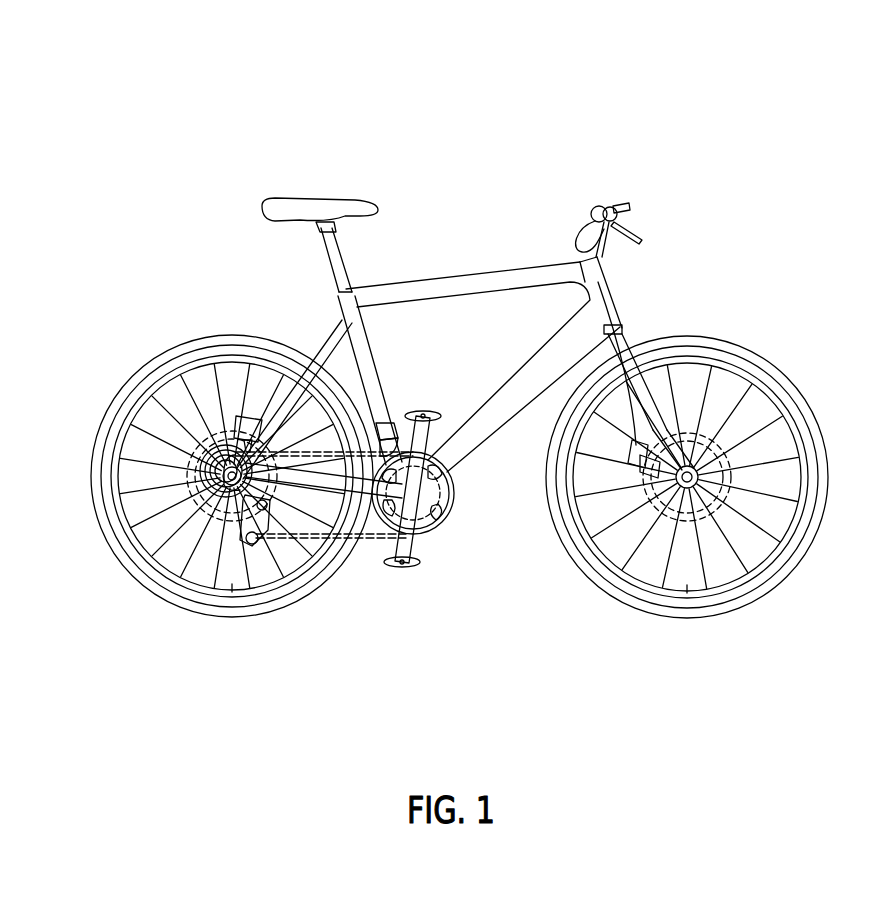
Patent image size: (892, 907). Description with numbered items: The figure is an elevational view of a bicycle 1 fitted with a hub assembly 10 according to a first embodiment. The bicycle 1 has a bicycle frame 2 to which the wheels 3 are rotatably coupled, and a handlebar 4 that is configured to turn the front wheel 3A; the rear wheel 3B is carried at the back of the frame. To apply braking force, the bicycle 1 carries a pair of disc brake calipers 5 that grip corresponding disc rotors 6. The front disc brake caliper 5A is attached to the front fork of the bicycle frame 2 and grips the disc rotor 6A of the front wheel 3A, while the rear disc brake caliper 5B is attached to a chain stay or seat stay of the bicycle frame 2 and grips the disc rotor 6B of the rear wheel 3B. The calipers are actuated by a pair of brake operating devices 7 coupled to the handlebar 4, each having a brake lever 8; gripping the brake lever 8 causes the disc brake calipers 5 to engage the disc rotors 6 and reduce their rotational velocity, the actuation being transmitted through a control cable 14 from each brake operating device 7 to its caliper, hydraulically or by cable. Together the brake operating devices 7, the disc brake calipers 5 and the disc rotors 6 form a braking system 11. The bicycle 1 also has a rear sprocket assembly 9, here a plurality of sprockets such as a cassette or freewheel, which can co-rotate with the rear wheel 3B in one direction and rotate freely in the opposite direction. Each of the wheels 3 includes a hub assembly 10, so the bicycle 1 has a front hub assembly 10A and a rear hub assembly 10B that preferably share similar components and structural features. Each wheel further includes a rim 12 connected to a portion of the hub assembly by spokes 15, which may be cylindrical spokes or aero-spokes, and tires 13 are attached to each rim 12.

The bicycle 1 is at (313, 47).
The bicycle frame 2 is at (547, 351).
The wheels 3 is at (505, 105).
The front wheel 3A is at (788, 320).
The rear wheel 3B is at (137, 320).
The handlebar 4 is at (608, 205).
The disc brake calipers 5 is at (486, 373).
The front disc brake caliper 5A is at (640, 452).
The rear disc brake caliper 5B is at (258, 420).
The disc rotors 6 is at (499, 633).
The disc rotor 6A is at (660, 500).
The disc rotor 6B is at (268, 506).
The brake operating devices 7 is at (657, 217).
The brake lever 8 is at (641, 240).
The rear sprocket assembly 9 is at (198, 490).
The hub assembly 10 is at (499, 698).
The front hub assembly 10A is at (660, 501).
The rear hub assembly 10B is at (268, 507).
The braking system 11 is at (658, 194).
The rim 12 is at (132, 400).
The tires 13 is at (158, 353).
The control cable 14 is at (265, 410).
The spokes 15 is at (197, 482).